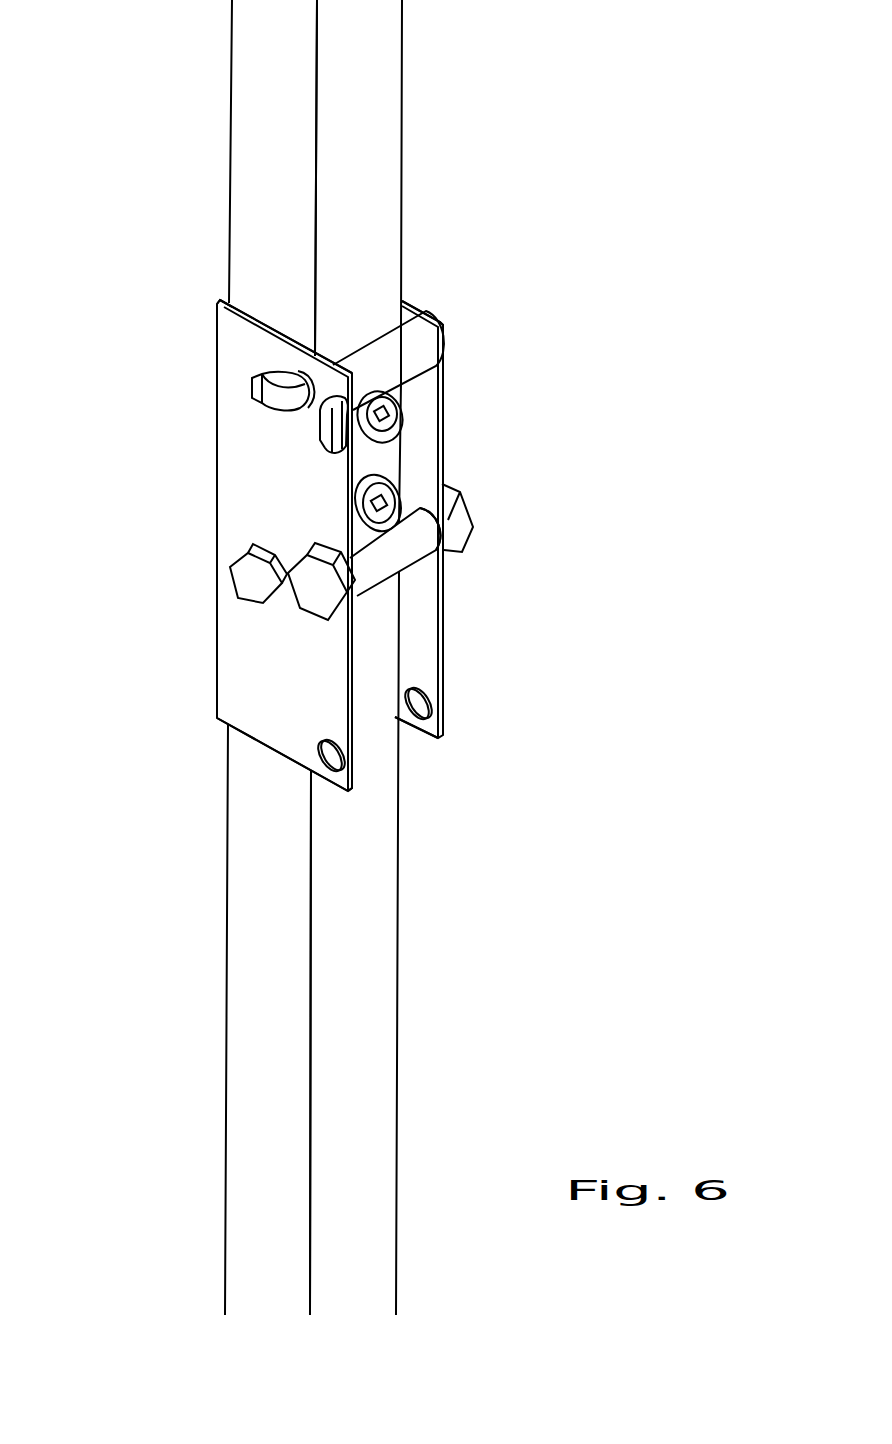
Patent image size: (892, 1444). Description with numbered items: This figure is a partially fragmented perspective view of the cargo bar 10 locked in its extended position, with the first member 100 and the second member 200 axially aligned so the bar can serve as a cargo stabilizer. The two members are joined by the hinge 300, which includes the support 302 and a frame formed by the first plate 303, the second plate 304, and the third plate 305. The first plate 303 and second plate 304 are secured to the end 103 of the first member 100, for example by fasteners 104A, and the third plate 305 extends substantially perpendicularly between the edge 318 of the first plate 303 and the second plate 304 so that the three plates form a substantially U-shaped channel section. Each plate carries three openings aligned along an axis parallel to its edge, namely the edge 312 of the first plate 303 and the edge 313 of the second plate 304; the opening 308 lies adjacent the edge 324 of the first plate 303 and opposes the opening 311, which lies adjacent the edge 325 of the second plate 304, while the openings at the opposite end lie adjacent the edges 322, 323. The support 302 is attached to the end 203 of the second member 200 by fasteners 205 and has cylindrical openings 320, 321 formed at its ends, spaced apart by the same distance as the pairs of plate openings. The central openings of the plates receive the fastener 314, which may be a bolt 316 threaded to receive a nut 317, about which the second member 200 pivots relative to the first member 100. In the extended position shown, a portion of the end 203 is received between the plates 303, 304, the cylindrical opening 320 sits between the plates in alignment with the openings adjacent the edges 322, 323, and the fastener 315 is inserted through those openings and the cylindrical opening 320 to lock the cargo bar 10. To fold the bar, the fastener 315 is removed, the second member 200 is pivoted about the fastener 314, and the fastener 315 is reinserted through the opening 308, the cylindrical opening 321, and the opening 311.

The cargo bar 10 is at (656, 195).
The first member 100 is at (231, 1023).
The end of first member 103 is at (375, 611).
The fasteners 104A is at (240, 582).
The second member 200 is at (393, 101).
The end of second member 203 is at (375, 312).
The fasteners 205 is at (390, 399).
The hinge 300 is at (301, 539).
The support 302 is at (408, 316).
The first plate 303 is at (247, 550).
The second plate 304 is at (392, 488).
The third plate 305 is at (228, 300).
The opening 308 is at (325, 750).
The opening 311 is at (426, 712).
The edge of first plate 312 is at (352, 732).
The edge of second plate 313 is at (442, 652).
The fastener 314 is at (465, 488).
The fastener 315 is at (284, 364).
The bolt 316 is at (307, 588).
The nut 317 is at (461, 538).
The edge of first plate 318 is at (217, 356).
The cylindrical opening 320 is at (413, 357).
The cylindrical opening 321 is at (447, 520).
The edge of first plate 322 is at (307, 372).
The edge of second plate 323 is at (410, 330).
The edge of first plate 324 is at (267, 742).
The edge of second plate 325 is at (426, 735).